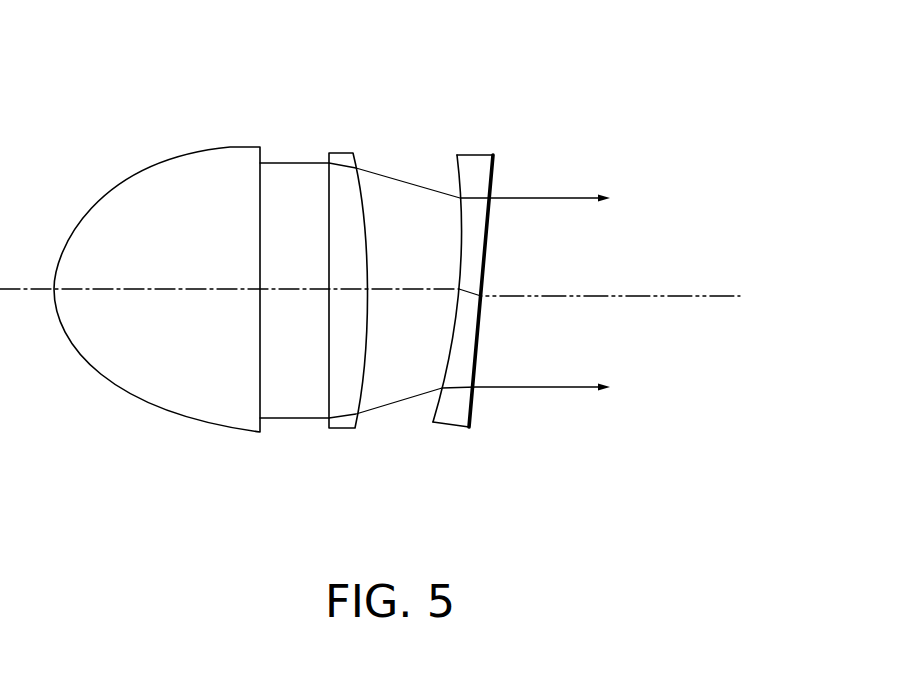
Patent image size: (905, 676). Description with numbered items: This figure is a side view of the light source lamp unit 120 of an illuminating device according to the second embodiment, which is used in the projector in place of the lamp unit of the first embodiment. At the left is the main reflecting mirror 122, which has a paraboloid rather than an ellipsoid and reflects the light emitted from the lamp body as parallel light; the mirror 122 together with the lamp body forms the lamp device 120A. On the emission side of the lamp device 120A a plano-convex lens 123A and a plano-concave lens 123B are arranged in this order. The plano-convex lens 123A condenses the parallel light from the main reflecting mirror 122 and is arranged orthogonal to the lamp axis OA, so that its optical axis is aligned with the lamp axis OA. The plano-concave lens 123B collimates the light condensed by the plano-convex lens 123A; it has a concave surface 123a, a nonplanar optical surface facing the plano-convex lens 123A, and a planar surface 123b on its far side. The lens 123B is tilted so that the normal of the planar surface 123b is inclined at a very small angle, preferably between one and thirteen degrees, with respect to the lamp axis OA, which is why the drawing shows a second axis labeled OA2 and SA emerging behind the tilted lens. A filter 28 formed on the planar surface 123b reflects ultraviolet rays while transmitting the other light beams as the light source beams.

The light source lamp unit 120 is at (259, 95).
The lamp device 120A is at (157, 237).
The main reflecting mirror 122 is at (184, 154).
The plano-convex lens 123A is at (341, 152).
The plano-concave lens 123B is at (475, 285).
The concave surface 123a is at (432, 412).
The planar surface 123b is at (472, 413).
The filter 28 is at (522, 305).
The lamp axis OA is at (298, 292).
The second optical axis OA2 is at (548, 298).
The system axis SA is at (599, 321).